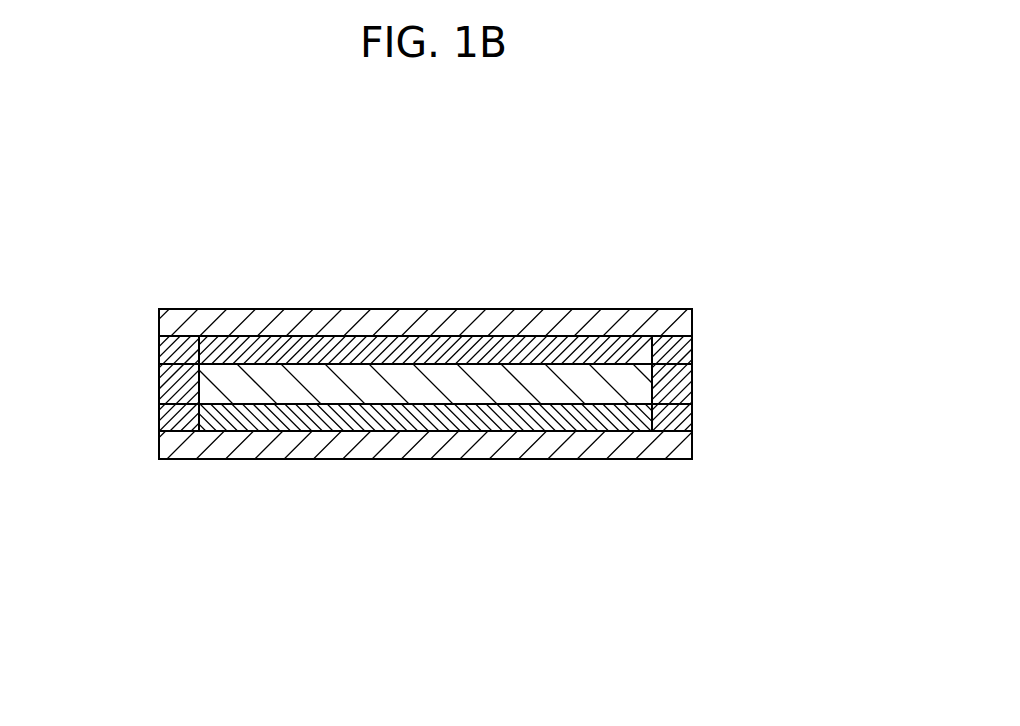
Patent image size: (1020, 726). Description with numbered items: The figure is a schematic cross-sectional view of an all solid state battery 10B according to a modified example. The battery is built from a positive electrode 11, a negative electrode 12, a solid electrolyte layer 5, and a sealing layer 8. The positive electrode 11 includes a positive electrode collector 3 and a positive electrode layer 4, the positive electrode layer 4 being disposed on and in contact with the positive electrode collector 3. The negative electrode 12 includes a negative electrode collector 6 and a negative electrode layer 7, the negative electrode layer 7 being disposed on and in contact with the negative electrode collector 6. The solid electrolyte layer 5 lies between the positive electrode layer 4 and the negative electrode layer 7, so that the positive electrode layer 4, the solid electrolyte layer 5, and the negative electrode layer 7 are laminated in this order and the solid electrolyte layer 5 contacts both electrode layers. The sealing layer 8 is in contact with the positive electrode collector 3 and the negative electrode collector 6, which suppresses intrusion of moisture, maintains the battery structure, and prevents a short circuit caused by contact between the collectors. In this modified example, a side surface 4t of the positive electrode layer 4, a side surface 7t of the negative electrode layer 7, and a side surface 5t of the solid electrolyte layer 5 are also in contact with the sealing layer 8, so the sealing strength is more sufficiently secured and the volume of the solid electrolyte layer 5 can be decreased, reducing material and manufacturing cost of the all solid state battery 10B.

The all solid state battery 10B is at (597, 162).
The positive electrode collector 3 is at (497, 450).
The positive electrode layer 4 is at (420, 427).
The solid electrolyte layer 5 is at (285, 383).
The negative electrode collector 6 is at (503, 322).
The negative electrode layer 7 is at (420, 350).
The sealing layer 8 is at (178, 385).
The positive electrode 11 is at (512, 582).
The negative electrode 12 is at (510, 190).
The side surface of negative electrode layer 7t is at (190, 338).
The side surface of positive electrode layer 4t is at (193, 424).
The side surface of solid electrolyte layer 5t is at (665, 379).